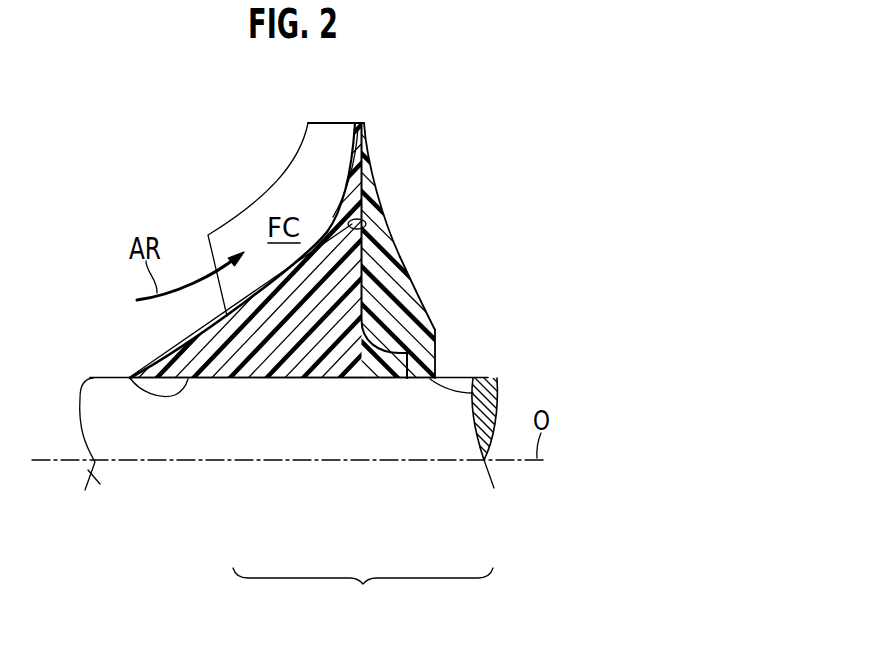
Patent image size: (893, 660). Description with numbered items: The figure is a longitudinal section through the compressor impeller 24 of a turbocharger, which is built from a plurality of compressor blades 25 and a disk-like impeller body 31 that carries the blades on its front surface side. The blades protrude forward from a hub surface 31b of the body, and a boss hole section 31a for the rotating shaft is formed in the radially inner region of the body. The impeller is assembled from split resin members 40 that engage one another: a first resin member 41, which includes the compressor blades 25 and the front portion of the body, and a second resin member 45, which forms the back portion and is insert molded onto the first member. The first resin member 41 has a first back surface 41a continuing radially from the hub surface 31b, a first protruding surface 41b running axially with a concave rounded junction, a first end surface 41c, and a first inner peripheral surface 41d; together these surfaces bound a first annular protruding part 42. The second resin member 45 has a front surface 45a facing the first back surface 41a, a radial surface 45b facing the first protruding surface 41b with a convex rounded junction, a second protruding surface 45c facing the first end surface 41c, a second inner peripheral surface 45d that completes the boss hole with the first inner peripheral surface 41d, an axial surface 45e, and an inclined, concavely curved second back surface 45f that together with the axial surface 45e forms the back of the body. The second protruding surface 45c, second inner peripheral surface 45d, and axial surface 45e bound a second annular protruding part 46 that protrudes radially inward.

The compressor impeller 24 is at (480, 165).
The compressor blades 25 is at (327, 135).
The impeller body 31 is at (370, 373).
The boss hole section 31a is at (130, 378).
The hub surface 31b is at (168, 350).
The split resin members 40 is at (363, 593).
The first resin member 41 is at (280, 377).
The first back surface 41a is at (345, 205).
The first protruding surface 41b is at (383, 350).
The first end surface 41c is at (436, 358).
The first inner peripheral surface 41d is at (377, 380).
The first annular protruding part 42 is at (432, 352).
The second resin member 45 is at (420, 380).
The front surface 45a is at (366, 224).
The radial surface 45b is at (338, 378).
The second protruding surface 45c is at (400, 380).
The second inner peripheral surface 45d is at (490, 390).
The axial surface 45e is at (434, 366).
The second back surface 45f is at (372, 165).
The second annular protruding part 46 is at (440, 358).